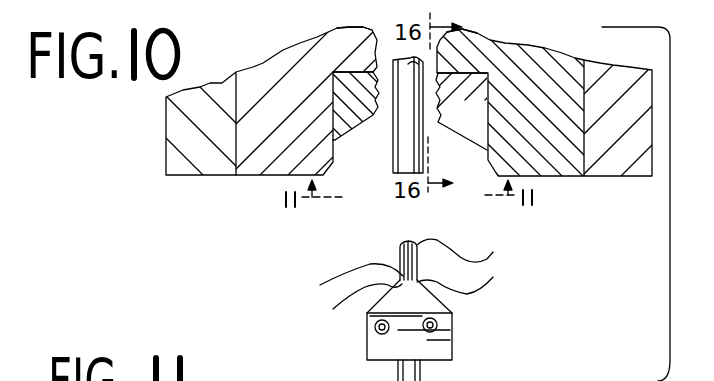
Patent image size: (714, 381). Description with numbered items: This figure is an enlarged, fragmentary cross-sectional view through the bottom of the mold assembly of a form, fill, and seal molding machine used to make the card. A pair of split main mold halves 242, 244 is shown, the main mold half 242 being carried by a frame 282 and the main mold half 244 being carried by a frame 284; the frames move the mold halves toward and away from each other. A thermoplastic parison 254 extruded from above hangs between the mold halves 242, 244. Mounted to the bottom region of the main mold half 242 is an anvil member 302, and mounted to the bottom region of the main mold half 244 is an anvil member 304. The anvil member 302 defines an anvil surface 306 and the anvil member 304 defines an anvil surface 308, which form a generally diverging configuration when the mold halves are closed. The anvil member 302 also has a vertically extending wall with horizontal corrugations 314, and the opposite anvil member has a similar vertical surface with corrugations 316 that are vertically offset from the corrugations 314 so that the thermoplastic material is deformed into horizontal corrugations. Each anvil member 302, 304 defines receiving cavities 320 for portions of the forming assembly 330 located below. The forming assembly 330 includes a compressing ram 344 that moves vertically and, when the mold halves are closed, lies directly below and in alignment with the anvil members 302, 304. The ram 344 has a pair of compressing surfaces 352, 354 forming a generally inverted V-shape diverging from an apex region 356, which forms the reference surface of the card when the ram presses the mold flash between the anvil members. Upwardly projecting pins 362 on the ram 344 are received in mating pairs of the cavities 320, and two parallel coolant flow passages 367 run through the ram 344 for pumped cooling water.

The frame 282 is at (188, 153).
The main mold half 242 is at (272, 150).
The frame 284 is at (638, 138).
The main mold half 244 is at (563, 163).
The anvil member 302 is at (338, 139).
The anvil member 304 is at (478, 126).
The anvil surface 306 is at (383, 75).
The anvil surface 308 is at (458, 131).
The corrugations 314 is at (363, 68).
The corrugations 316 is at (442, 73).
The receiving cavities 320 is at (387, 68).
The parison 254 is at (392, 171).
The forming assembly 330 is at (464, 341).
The compressing ram 344 is at (358, 340).
The compressing surface 352 is at (345, 301).
The compressing surface 354 is at (468, 292).
The apex region 356 is at (345, 283).
The pin 362 is at (478, 280).
The coolant flow passages 367 is at (382, 334).